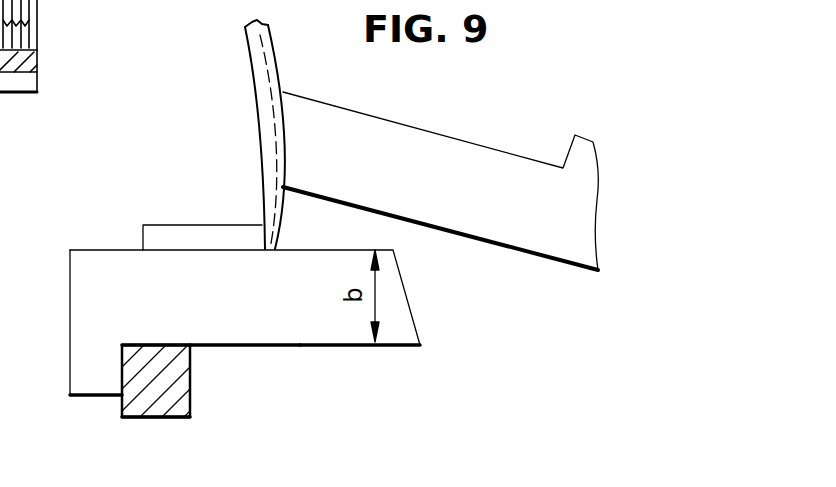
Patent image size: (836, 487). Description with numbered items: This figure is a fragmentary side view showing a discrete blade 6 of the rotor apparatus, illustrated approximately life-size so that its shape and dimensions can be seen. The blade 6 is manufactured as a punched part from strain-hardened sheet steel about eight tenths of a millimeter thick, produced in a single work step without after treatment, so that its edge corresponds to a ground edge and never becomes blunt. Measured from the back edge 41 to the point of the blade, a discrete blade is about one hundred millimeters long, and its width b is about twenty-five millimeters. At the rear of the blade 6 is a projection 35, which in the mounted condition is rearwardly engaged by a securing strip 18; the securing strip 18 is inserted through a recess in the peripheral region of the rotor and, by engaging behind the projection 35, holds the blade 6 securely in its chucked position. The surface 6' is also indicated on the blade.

The back edge 41 is at (70, 283).
The blade 6 is at (245, 297).
The projection 35 is at (92, 357).
The lower surface of support body 6' is at (360, 379).
The securing strip 18 is at (163, 400).